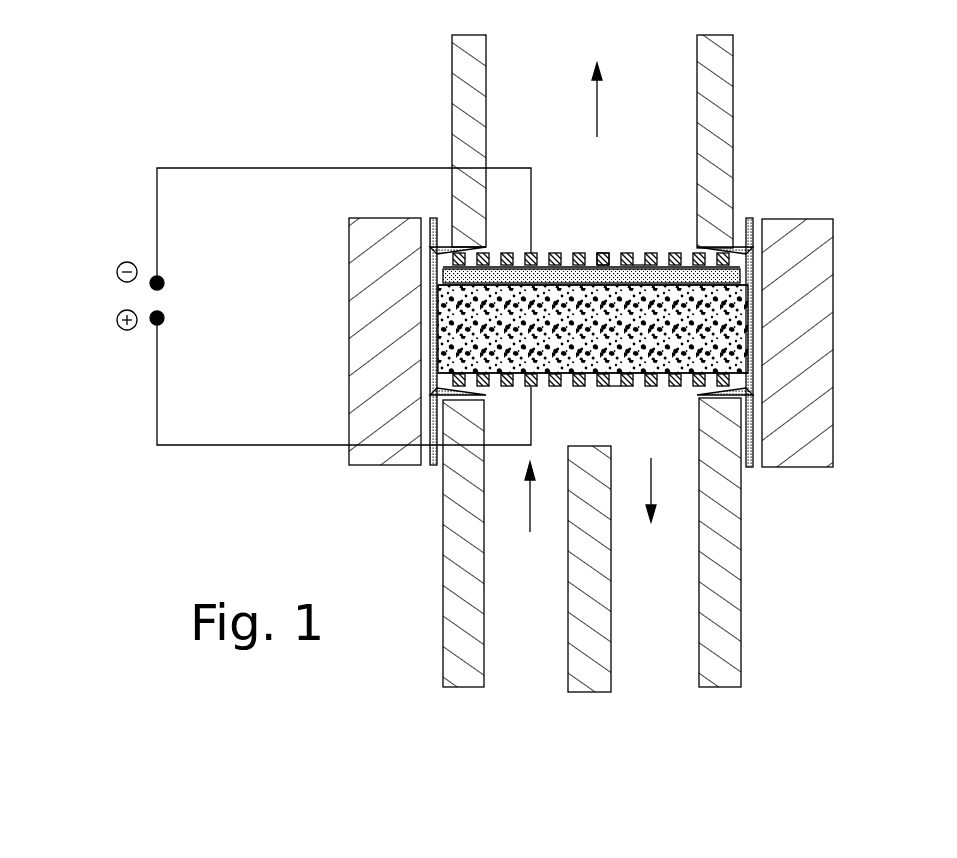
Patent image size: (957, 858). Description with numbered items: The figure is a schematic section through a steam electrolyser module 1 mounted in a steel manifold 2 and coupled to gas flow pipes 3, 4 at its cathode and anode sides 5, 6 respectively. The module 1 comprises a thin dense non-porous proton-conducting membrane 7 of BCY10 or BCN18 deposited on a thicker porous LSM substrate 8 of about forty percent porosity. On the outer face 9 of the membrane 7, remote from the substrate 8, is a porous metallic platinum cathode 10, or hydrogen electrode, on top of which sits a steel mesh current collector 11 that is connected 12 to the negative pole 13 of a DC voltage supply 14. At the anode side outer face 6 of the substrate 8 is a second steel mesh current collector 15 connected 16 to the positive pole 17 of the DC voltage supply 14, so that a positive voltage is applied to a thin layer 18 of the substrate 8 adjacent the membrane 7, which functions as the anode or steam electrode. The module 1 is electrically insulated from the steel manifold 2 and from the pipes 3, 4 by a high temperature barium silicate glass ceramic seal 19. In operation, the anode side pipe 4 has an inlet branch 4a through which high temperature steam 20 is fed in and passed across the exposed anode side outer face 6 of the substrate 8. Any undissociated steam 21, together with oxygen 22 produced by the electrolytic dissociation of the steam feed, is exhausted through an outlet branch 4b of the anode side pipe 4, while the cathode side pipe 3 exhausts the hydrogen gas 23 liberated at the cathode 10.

The steam electrolyser module 1 is at (442, 338).
The manifold 2 is at (820, 236).
The cathode side gas flow pipe 3 is at (717, 82).
The anode side gas flow pipe 4 is at (731, 563).
The inlet branch 4a is at (503, 668).
The outlet branch 4b is at (675, 670).
The cathode side 5 is at (580, 247).
The anode side outer face 6 is at (557, 390).
The proton-conducting membrane 7 is at (750, 275).
The LSM substrate 8 is at (750, 347).
The outer face of the membrane 9 is at (638, 268).
The cathode 10 is at (662, 268).
The steel mesh current collector 11 is at (603, 250).
The connection 12 is at (193, 168).
The negative pole 13 is at (116, 272).
The DC voltage supply 14 is at (150, 297).
The steel mesh current collector 15 is at (625, 388).
The connection 16 is at (197, 447).
The positive pole 17 is at (116, 323).
The anode layer 18 is at (743, 305).
The glass ceramic seal 19 is at (435, 218).
The steam 20 is at (520, 512).
The undissociated steam 21 is at (692, 597).
The oxygen 22 is at (660, 519).
The hydrogen gas 23 is at (595, 112).